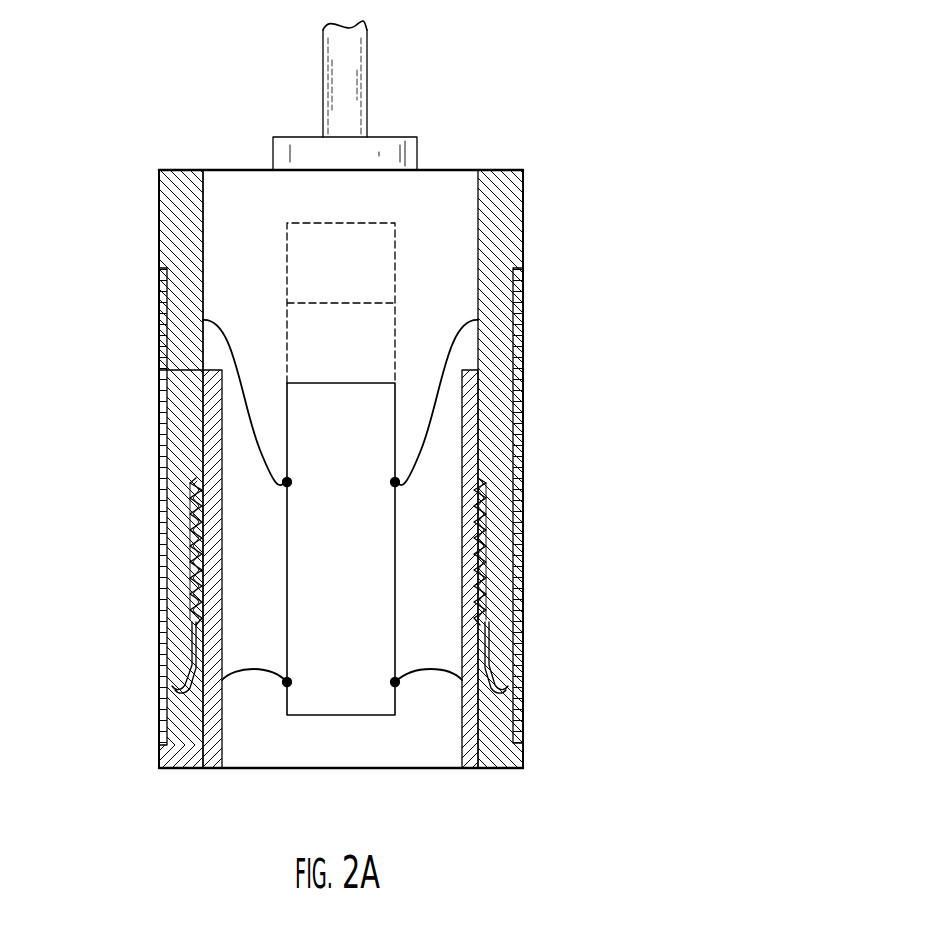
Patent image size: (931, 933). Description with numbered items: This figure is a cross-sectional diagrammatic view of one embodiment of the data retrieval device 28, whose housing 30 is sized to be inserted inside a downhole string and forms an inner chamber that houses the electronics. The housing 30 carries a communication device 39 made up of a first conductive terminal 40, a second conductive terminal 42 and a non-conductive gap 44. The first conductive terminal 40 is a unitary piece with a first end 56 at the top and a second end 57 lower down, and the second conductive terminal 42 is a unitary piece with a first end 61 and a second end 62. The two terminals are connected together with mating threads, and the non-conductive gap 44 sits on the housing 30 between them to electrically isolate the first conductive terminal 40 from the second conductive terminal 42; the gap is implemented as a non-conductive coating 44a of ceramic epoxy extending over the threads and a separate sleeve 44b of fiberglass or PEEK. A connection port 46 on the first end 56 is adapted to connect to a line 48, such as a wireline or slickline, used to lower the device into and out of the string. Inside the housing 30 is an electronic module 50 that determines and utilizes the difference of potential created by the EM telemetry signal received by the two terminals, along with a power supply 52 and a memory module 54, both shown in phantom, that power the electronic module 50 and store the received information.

The data retrieval device 28 is at (563, 92).
The housing 30 is at (245, 168).
The communication device 39 is at (158, 438).
The first conductive terminal 40 is at (157, 246).
The second conductive terminal 42 is at (185, 718).
The non-conductive gap 44 is at (190, 505).
The non-conductive coating 44a is at (203, 553).
The sleeve 44b is at (160, 560).
The connection port 46 is at (417, 153).
The line 48 is at (355, 75).
The electronic module 50 is at (397, 613).
The power supply 52 is at (397, 355).
The memory module 54 is at (397, 265).
The first end 56 is at (174, 170).
The second end 57 is at (170, 660).
The first end 61 is at (217, 366).
The second end 62 is at (187, 770).